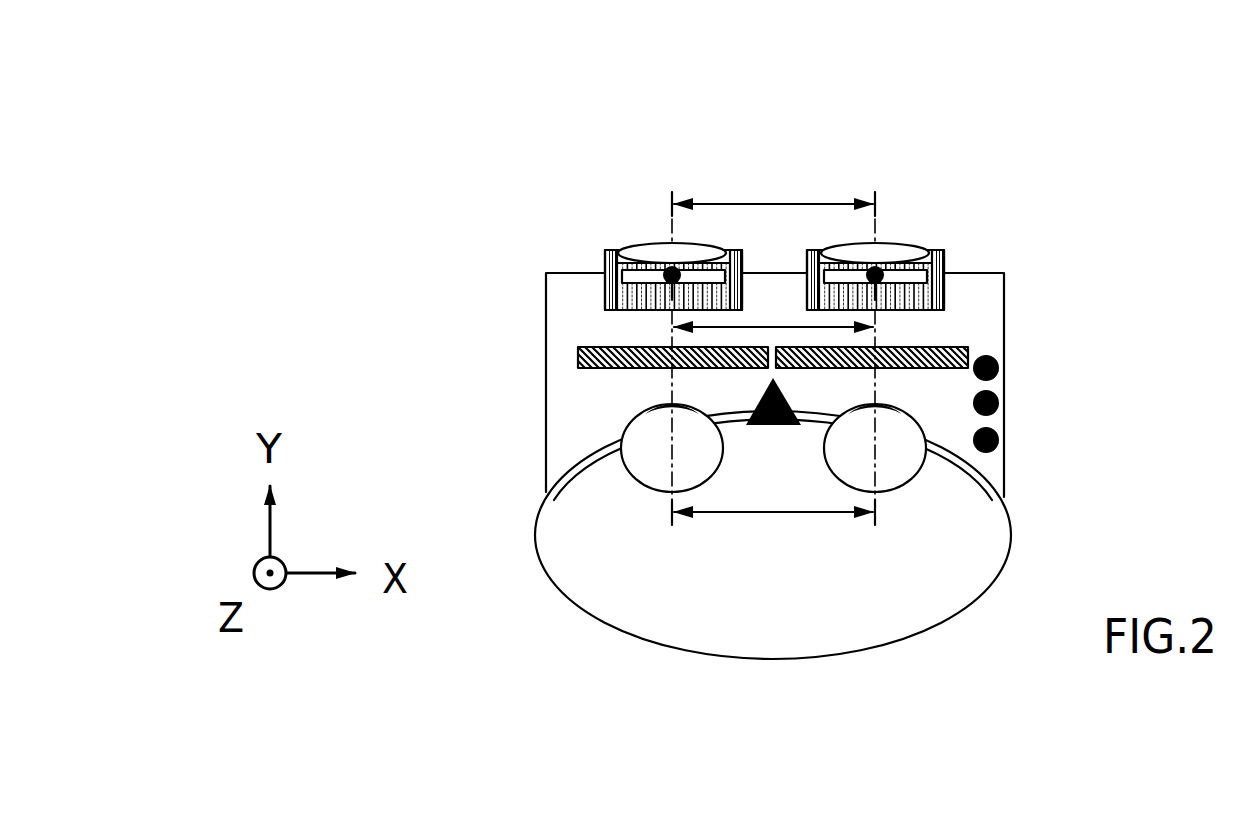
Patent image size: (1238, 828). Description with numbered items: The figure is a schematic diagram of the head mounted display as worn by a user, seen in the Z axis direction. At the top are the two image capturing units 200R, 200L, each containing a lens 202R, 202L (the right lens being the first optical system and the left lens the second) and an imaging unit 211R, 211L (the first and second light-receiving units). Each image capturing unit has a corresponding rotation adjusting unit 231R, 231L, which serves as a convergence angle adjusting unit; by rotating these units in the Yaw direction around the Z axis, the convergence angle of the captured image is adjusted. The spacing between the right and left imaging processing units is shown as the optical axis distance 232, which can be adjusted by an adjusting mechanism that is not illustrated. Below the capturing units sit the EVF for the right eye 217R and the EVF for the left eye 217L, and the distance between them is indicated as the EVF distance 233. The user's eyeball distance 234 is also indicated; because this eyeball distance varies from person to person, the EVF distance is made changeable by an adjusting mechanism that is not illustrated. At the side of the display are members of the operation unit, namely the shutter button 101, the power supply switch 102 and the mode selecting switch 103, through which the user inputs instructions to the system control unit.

The shutter button 101 is at (1000, 368).
The power supply switch 102 is at (1000, 403).
The mode selecting switch 103 is at (1000, 440).
The image capturing unit for the left eye 200L is at (572, 222).
The image capturing unit for the right eye 200R is at (1009, 199).
The lens for the left eye 202L is at (628, 260).
The lens for the right eye 202R is at (922, 252).
The imaging unit for the left eye 211L is at (627, 289).
The imaging unit for the right eye 211R is at (922, 283).
The EVF for the left eye 217L is at (598, 369).
The EVF for the right eye 217R is at (968, 349).
The rotation adjusting unit for the left eye 231L is at (636, 252).
The rotation adjusting unit for the right eye 231R is at (912, 260).
The optical axis distance 232 is at (772, 200).
The EVF distance 233 is at (727, 332).
The eyeball distance 234 is at (765, 520).